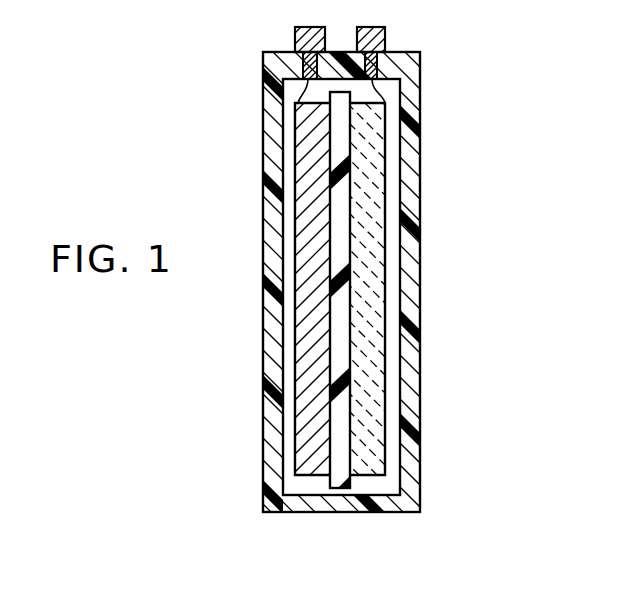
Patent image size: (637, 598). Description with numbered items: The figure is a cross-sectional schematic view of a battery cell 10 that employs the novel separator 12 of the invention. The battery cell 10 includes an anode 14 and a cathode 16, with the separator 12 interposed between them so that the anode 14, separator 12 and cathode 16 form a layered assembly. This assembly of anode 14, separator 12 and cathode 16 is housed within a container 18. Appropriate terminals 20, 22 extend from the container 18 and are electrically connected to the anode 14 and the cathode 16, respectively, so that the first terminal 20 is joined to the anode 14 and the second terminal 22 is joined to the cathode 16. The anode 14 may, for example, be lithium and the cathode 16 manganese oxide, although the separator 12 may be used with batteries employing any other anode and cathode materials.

The battery cell 10 is at (549, 78).
The separator 12 is at (338, 467).
The anode 14 is at (303, 341).
The cathode 16 is at (370, 242).
The container 18 is at (412, 351).
The terminal 20 is at (295, 36).
The terminal 22 is at (386, 35).